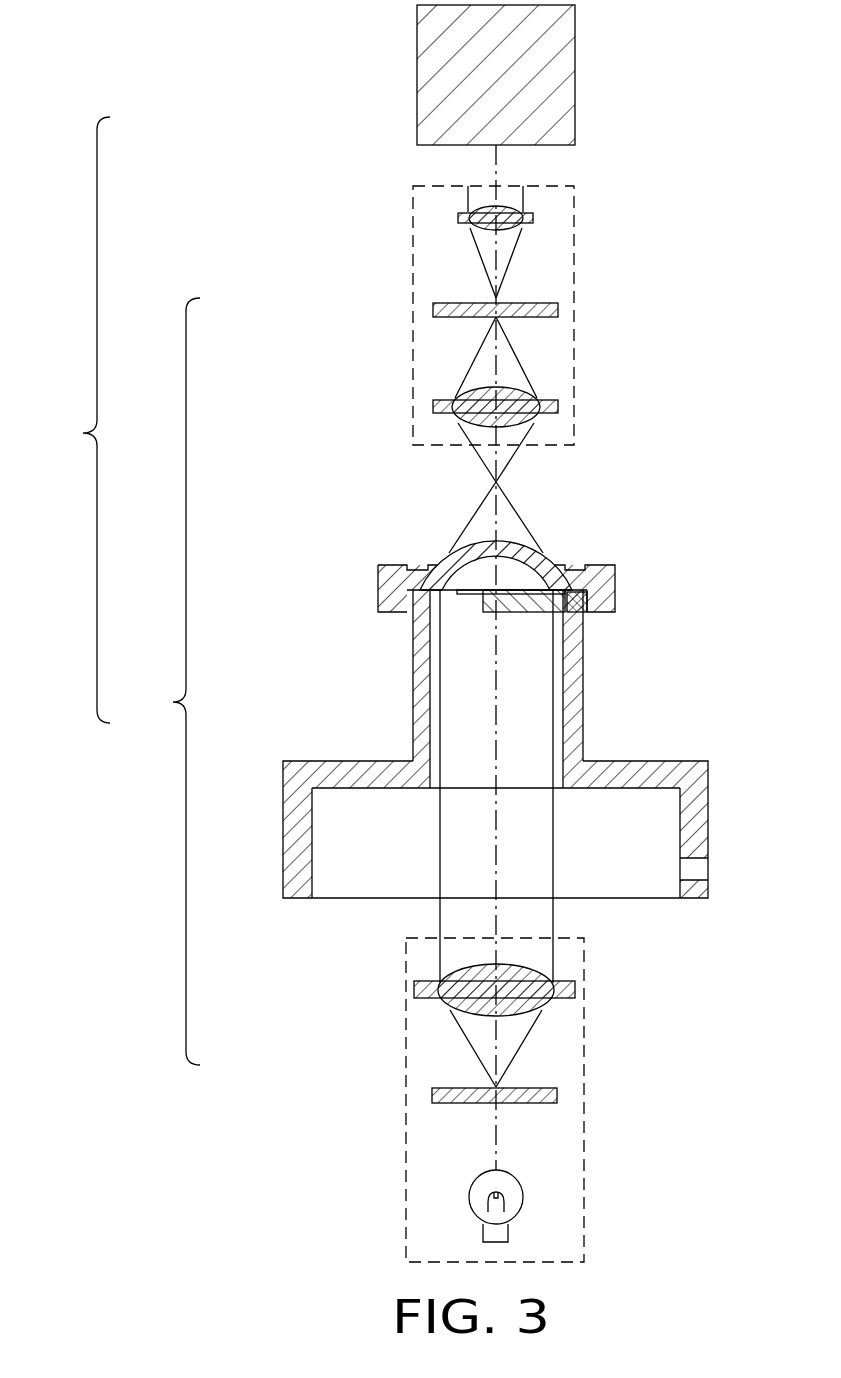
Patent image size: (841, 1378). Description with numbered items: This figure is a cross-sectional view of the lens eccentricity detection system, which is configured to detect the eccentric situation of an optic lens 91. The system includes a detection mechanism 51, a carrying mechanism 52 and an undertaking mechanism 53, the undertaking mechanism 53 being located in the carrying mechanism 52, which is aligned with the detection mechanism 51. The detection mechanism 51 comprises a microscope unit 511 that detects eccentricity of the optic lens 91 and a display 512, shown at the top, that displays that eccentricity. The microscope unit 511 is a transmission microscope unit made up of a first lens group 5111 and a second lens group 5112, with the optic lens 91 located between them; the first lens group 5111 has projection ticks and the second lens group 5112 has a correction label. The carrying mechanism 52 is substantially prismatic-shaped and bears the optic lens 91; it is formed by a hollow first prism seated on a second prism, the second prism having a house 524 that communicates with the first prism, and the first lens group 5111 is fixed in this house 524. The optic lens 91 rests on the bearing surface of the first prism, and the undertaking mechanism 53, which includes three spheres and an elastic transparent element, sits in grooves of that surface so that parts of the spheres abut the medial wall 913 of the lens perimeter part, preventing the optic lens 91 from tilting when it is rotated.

The detection mechanism 51 is at (68, 420).
The microscope unit 511 is at (156, 681).
The first lens group 5111 is at (406, 1022).
The second lens group 5112 is at (413, 333).
The display 512 is at (450, 68).
The carrying mechanism 52 is at (642, 768).
The house 524 is at (627, 878).
The undertaking mechanism 53 is at (587, 613).
The optic lens 91 is at (603, 560).
The medial wall 913 is at (582, 598).